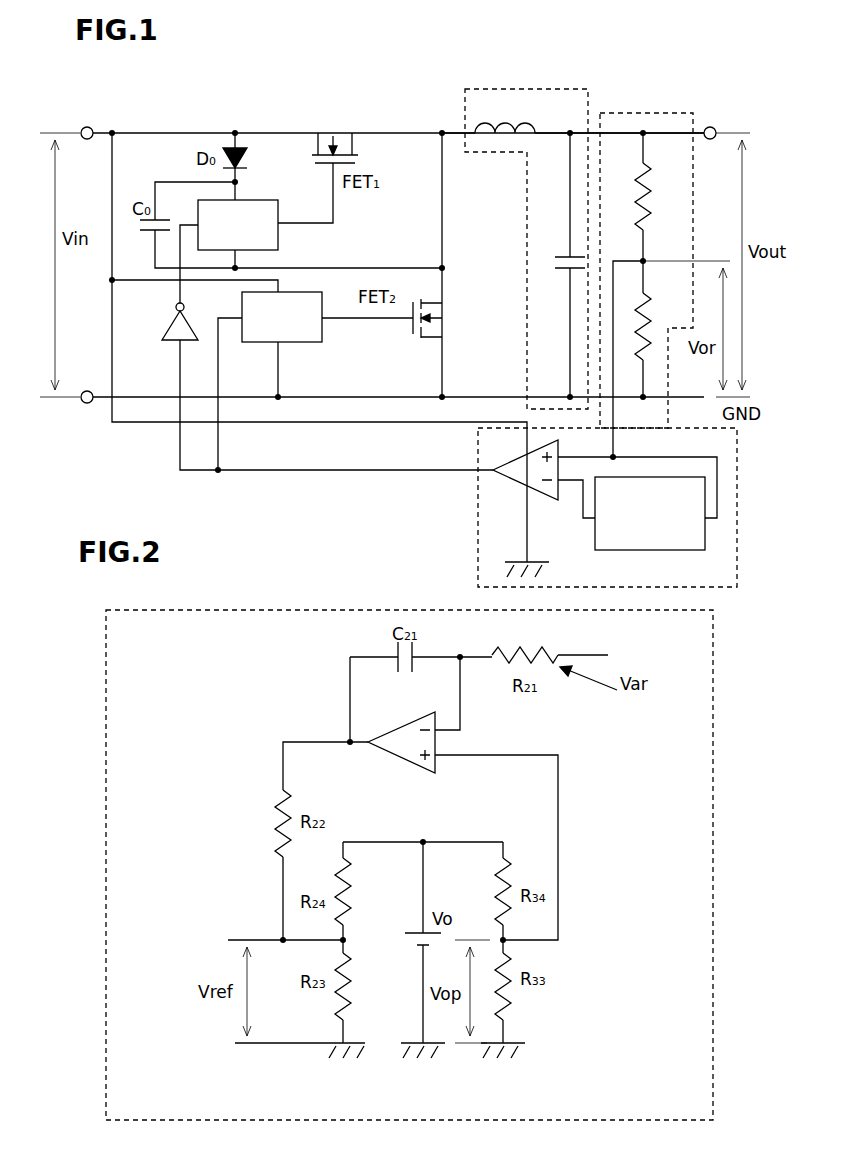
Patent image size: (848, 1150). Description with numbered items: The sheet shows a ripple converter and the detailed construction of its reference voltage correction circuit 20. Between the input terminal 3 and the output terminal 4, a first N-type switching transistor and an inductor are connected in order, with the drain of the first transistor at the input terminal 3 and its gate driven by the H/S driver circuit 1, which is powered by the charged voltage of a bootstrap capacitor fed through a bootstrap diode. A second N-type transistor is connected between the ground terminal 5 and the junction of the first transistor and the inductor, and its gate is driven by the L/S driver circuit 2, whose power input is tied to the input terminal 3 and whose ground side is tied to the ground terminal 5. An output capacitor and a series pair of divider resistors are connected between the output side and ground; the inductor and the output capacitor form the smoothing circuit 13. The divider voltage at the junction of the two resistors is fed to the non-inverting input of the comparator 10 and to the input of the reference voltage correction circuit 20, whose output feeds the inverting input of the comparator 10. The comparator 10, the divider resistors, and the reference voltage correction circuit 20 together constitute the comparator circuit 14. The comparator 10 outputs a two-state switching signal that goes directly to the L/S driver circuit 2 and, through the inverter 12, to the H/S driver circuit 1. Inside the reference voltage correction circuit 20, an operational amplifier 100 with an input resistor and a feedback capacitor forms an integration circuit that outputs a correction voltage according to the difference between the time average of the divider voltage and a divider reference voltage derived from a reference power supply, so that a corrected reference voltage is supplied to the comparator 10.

In FIG. 1, the H/S driver circuit 1 is at (278, 242).
In FIG. 1, the L/S driver circuit 2 is at (250, 342).
In FIG. 1, the input terminal 3 is at (91, 127).
In FIG. 1, the output terminal 4 is at (714, 127).
In FIG. 1, the ground terminal 5 is at (83, 403).
In FIG. 1, the comparator 10 is at (520, 486).
In FIG. 1, the inverter 12 is at (168, 340).
In FIG. 1, the smoothing circuit 13 is at (570, 88).
In FIG. 1, the comparator circuit 14 is at (655, 112).
In FIG. 1, the reference voltage correction circuit 20 is at (688, 551).
In FIG. 2, the reference voltage correction circuit 20 is at (98, 796).
In FIG. 2, the operational amplifier 100 is at (398, 757).